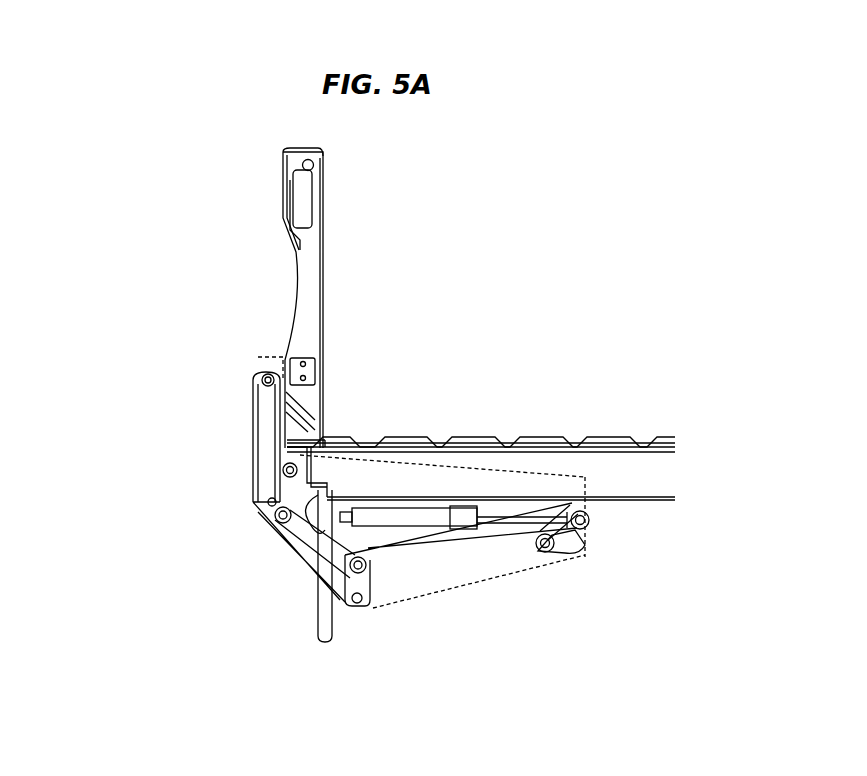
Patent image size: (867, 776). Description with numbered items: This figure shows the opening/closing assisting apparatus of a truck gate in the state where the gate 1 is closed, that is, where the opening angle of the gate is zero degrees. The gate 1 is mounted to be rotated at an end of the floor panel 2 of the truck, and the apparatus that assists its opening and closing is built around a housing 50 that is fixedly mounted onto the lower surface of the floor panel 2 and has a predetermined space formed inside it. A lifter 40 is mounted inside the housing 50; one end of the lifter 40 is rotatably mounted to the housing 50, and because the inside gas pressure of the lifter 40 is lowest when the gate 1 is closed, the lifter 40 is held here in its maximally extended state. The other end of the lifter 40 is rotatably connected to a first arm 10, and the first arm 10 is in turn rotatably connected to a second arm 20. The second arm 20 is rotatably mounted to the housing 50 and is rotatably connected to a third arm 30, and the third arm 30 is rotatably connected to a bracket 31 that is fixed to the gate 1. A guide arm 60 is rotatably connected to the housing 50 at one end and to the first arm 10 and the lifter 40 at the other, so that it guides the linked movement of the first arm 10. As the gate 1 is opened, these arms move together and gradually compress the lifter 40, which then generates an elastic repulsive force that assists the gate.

The gate 1 is at (320, 290).
The floor panel 2 is at (520, 440).
The first arm 10 is at (428, 540).
The second arm 20 is at (307, 548).
The third arm 30 is at (268, 465).
The bracket 31 is at (268, 372).
The lifter 40 is at (430, 447).
The housing 50 is at (512, 583).
The guide arm 60 is at (585, 553).